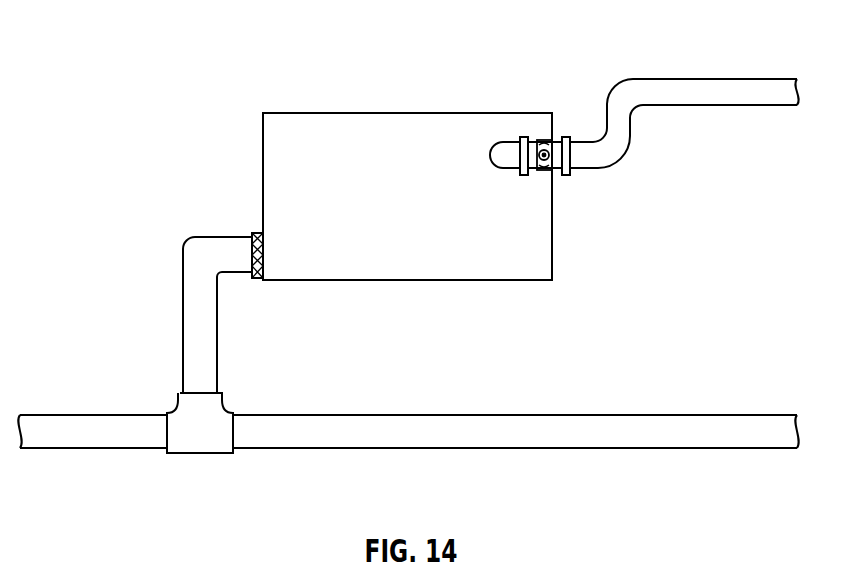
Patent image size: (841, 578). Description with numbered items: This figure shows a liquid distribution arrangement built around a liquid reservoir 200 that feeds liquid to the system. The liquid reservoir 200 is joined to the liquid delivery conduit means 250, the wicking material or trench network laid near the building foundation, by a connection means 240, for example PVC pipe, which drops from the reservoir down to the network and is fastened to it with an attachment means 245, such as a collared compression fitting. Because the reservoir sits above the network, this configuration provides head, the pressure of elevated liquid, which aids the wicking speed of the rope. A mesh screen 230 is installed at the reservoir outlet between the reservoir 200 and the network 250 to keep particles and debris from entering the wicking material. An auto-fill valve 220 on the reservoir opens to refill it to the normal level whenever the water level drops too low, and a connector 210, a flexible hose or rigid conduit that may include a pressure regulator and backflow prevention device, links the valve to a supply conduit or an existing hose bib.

The liquid reservoir 200 is at (302, 112).
The connector 210 is at (743, 85).
The auto-fill valve 220 is at (547, 142).
The mesh screen 230 is at (259, 232).
The connection means 240 is at (183, 322).
The attachment means 245 is at (200, 455).
The liquid delivery conduit means 250 is at (622, 450).